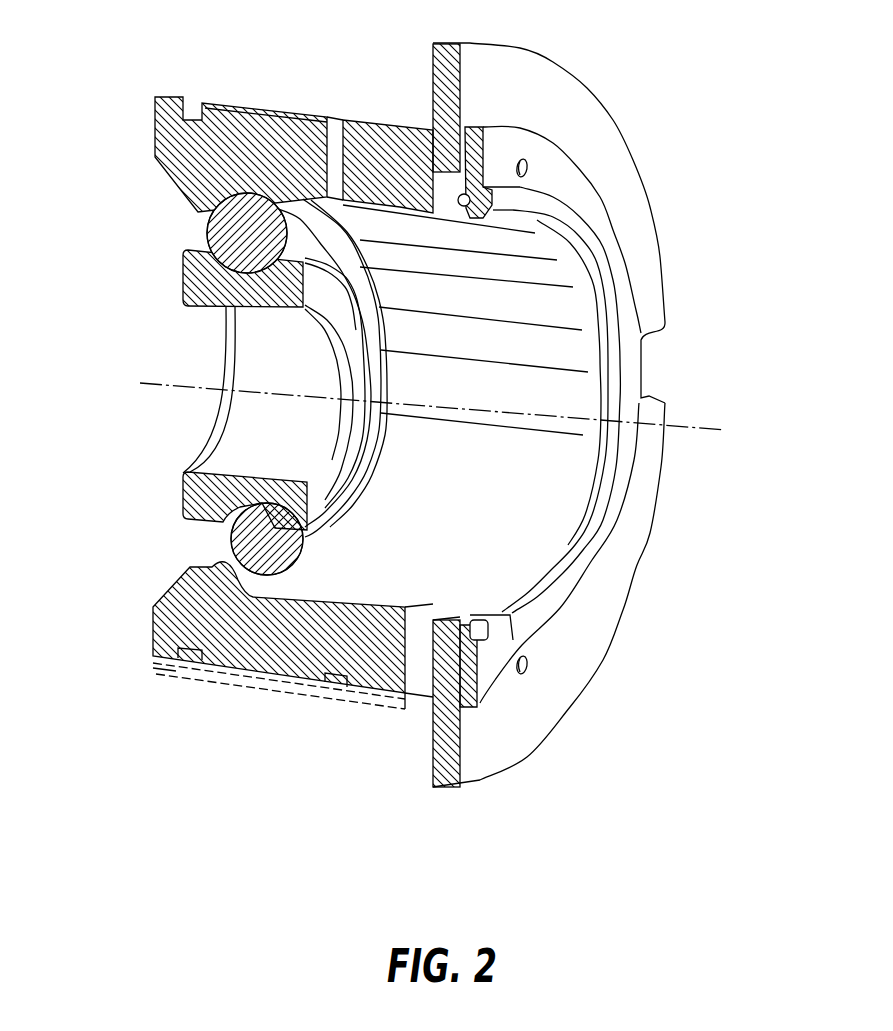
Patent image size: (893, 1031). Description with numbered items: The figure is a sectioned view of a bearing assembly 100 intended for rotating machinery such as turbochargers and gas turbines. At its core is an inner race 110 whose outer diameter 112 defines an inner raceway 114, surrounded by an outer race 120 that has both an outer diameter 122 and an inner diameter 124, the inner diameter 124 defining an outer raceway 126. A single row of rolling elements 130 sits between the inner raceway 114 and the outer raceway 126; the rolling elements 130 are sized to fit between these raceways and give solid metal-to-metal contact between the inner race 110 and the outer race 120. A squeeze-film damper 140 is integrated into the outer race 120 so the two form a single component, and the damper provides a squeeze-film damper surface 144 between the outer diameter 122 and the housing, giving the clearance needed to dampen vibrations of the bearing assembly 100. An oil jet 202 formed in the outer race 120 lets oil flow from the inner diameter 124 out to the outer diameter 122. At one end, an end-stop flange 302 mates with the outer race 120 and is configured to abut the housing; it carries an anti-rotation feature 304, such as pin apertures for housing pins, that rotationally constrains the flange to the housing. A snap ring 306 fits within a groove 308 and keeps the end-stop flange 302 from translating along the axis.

The bearing assembly 100 is at (135, 82).
The inner race 110 is at (260, 427).
The outer diameter of the inner race 112 is at (210, 248).
The inner raceway 114 is at (183, 521).
The outer race 120 is at (182, 152).
The outer diameter of the outer race 122 is at (226, 95).
The inner diameter of the outer race 124 is at (270, 180).
The outer raceway 126 is at (212, 567).
The rolling elements 130 is at (264, 248).
The squeeze-film damper 140 is at (368, 95).
The squeeze-film damper surface 144 is at (232, 690).
The oil jet 202 is at (460, 120).
The end-stop flange 302 is at (572, 720).
The anti-rotation feature 304 is at (645, 378).
The snap ring 306 is at (560, 178).
The groove 308 is at (465, 210).